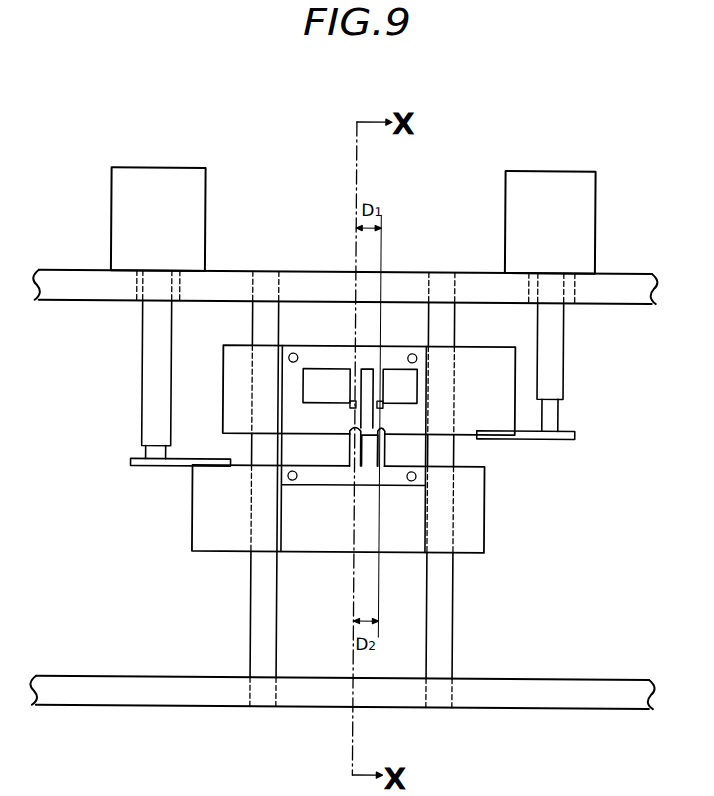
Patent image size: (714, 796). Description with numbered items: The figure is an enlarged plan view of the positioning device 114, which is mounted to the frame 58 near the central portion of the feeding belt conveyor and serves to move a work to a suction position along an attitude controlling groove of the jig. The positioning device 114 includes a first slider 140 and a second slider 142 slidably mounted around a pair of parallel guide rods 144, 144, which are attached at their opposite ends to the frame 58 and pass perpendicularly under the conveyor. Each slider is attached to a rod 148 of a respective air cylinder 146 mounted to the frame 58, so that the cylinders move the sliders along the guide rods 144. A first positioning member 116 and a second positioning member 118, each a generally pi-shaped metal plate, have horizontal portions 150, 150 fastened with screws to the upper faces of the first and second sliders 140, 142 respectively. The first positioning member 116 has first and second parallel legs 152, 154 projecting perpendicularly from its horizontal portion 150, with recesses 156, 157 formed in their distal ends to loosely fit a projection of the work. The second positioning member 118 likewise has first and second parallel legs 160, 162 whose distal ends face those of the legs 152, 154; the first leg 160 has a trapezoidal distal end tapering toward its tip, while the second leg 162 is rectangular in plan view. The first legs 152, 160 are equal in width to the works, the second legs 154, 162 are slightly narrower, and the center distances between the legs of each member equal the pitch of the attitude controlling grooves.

The frame 58 is at (370, 274).
The positioning device 114 is at (618, 340).
The first positioning member 116 is at (372, 353).
The second positioning member 118 is at (372, 478).
The first slider 140 is at (485, 353).
The second slider 142 is at (480, 514).
The guide rods 144 is at (278, 624).
The air cylinders 146 is at (147, 379).
The rods 148 is at (147, 456).
The horizontal portions 150 is at (321, 353).
The first leg 152 is at (350, 393).
The second leg 154 is at (383, 386).
The recess 156 is at (351, 406).
The recess 157 is at (383, 405).
The first leg 160 is at (351, 433).
The second leg 162 is at (382, 443).